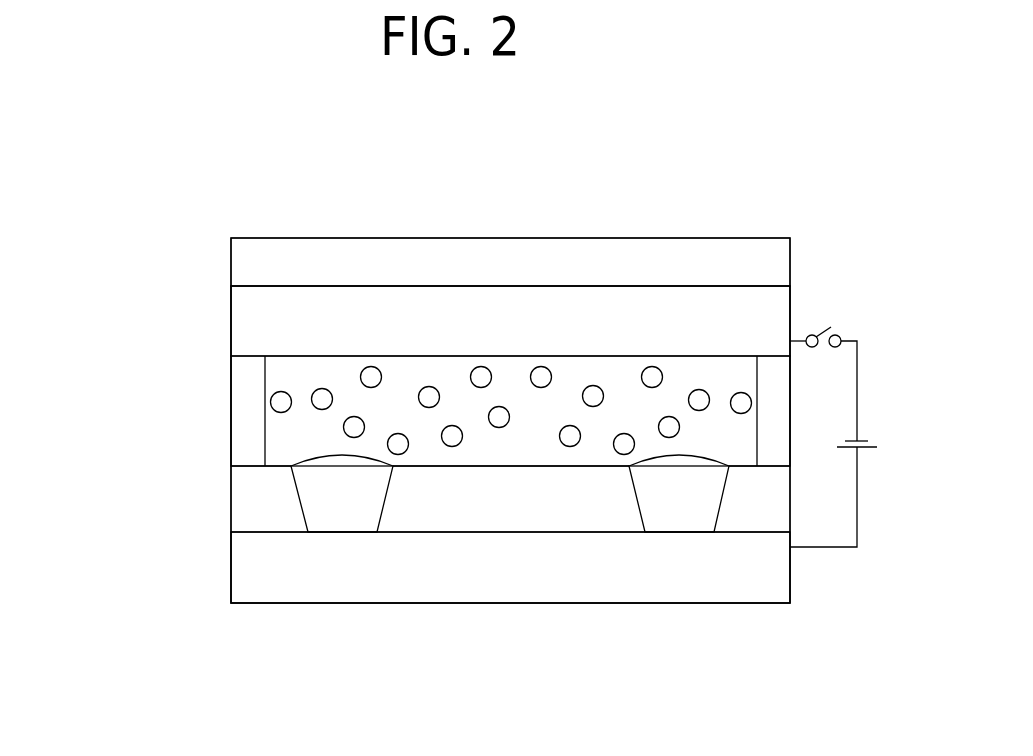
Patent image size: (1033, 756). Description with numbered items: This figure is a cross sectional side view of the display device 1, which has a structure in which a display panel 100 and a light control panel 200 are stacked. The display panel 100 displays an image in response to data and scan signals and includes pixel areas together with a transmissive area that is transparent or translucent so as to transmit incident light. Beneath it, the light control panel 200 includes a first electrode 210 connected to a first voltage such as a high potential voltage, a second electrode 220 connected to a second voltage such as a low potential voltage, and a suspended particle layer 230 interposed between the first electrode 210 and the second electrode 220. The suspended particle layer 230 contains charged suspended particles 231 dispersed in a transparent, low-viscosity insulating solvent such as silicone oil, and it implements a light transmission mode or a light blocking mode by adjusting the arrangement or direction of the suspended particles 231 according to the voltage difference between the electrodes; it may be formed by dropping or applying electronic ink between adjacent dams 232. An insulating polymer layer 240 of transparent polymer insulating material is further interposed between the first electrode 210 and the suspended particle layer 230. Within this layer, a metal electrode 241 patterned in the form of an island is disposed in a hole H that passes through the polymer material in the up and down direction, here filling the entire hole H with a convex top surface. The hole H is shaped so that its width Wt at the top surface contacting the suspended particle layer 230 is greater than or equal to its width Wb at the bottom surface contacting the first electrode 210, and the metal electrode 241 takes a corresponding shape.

The display device 1 is at (666, 197).
The display panel 100 is at (231, 254).
The light control panel 200 is at (73, 308).
The first electrode 210 is at (231, 576).
The second electrode 220 is at (231, 309).
The suspended particle layer 230 is at (143, 367).
The suspended particles 231 is at (270, 402).
The dams 232 is at (244, 373).
The insulating polymer layer 240 is at (231, 481).
The metal electrode 241 is at (320, 512).
The hole H is at (392, 513).
The width at the bottom surface of the hole Wb is at (377, 677).
The width at the top surface of the hole Wt is at (393, 718).